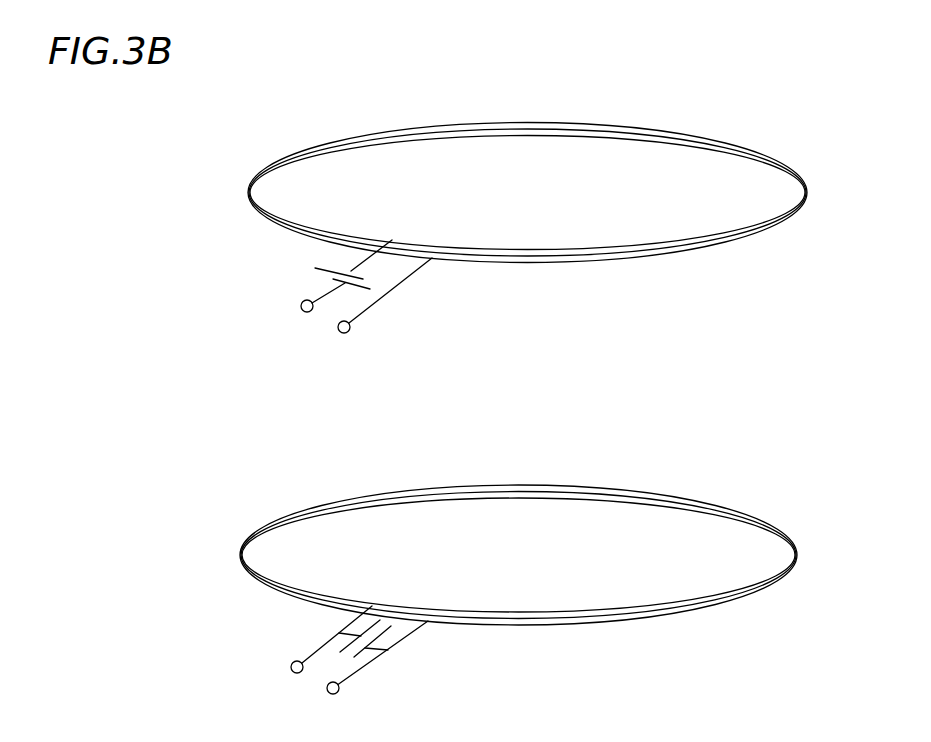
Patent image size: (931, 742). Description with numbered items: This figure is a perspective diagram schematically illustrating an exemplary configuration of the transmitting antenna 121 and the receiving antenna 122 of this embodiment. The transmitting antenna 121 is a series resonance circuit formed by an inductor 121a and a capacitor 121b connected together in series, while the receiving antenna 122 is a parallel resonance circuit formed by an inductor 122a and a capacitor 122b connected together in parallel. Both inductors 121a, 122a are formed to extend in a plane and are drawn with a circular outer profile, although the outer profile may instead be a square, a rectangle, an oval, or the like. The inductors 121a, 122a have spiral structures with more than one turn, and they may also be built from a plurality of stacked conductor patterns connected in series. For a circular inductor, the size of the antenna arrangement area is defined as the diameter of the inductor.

The transmitting antenna 121 is at (472, 228).
The inductor 121a is at (496, 193).
The capacitor 121b is at (343, 286).
The receiving antenna 122 is at (462, 589).
The inductor 122a is at (485, 555).
The capacitor 122b is at (339, 633).